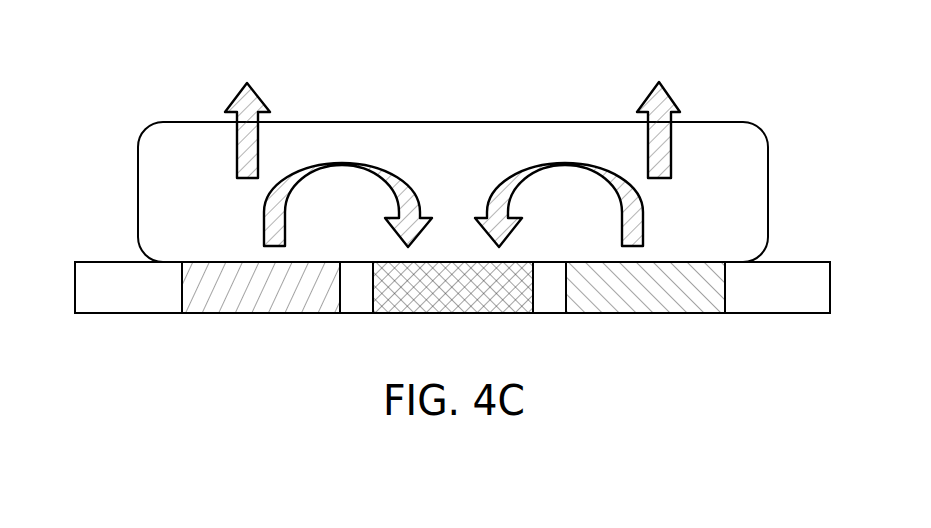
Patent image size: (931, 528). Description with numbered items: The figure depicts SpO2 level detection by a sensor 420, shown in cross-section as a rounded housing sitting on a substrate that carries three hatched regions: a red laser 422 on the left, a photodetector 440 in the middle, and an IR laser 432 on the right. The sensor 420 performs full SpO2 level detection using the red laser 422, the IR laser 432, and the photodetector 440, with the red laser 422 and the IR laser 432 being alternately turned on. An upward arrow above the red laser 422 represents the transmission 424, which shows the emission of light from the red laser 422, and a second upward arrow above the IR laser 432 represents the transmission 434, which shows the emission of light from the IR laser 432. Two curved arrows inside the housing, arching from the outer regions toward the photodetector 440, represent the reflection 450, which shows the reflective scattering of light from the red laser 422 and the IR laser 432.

The sensor 420 is at (153, 98).
The red laser 422 is at (260, 302).
The transmission 424 is at (248, 83).
The IR laser 432 is at (642, 302).
The transmission 434 is at (660, 83).
The photodetector 440 is at (445, 302).
The reflection 450 is at (479, 181).